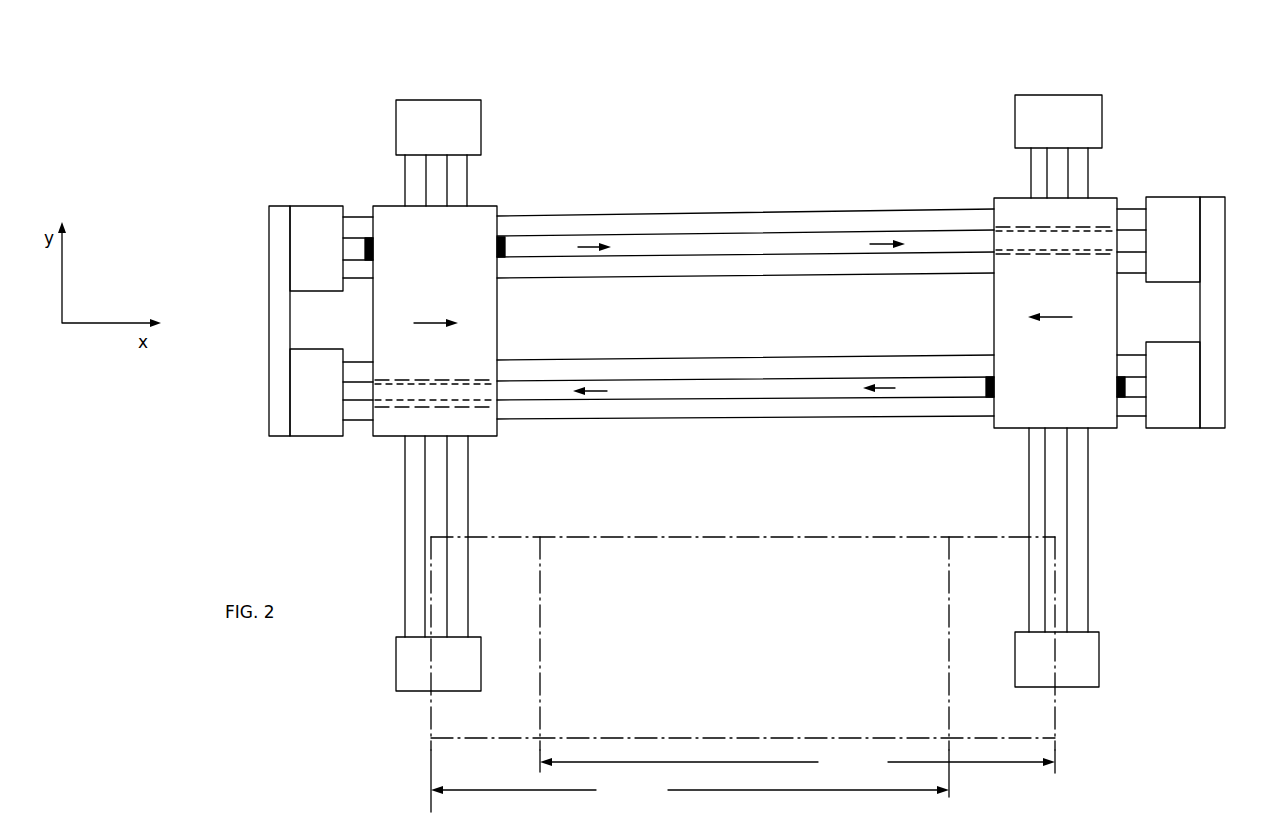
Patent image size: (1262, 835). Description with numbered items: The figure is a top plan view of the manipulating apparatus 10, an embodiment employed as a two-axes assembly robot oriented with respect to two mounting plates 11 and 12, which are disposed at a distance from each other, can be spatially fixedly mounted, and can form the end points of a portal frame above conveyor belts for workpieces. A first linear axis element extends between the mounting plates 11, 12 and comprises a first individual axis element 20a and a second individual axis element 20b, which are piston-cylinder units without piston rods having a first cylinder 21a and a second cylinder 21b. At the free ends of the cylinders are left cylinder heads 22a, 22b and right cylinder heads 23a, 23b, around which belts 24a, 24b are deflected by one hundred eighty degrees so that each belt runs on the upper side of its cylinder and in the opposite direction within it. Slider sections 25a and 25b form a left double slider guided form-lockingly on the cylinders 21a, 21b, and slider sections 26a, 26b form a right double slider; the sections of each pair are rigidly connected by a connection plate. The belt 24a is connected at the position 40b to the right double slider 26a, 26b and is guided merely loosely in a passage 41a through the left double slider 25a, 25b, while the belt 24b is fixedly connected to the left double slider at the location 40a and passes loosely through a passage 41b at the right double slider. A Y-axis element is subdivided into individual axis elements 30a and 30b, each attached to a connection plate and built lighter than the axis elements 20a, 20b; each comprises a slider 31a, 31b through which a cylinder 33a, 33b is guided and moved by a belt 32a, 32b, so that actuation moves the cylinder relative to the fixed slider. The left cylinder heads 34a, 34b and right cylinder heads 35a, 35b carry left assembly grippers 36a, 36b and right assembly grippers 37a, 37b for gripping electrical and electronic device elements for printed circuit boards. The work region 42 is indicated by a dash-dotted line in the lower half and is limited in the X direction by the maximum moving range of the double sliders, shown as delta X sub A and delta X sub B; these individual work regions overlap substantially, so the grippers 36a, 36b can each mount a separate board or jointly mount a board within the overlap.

The manipulating apparatus 10 is at (251, 43).
The mounting plate 11 is at (278, 316).
The mounting plate 12 is at (1222, 325).
The first individual axis element 20a is at (745, 431).
The second individual axis element 20b is at (745, 204).
The first cylinder 21a is at (568, 420).
The second cylinder 21b is at (546, 216).
The left cylinder head 22a is at (305, 438).
The left cylinder head 22b is at (305, 218).
The right cylinder head 23a is at (1177, 429).
The right cylinder head 23b is at (1160, 199).
The belt 24a is at (672, 390).
The belt 24b is at (655, 237).
The slider section 25a is at (480, 437).
The slider section 25b is at (482, 200).
The slider section 26a is at (1012, 430).
The slider section 26b is at (993, 198).
The first individual axis element 30a is at (370, 501).
The second individual axis element 30b is at (1119, 554).
The slider 31a is at (493, 325).
The slider 31b is at (1000, 312).
The belt 32a is at (438, 529).
The belt 32b is at (1048, 500).
The cylinder 33a is at (417, 570).
The cylinder 33b is at (1082, 598).
The left cylinder head 34a is at (407, 652).
The left cylinder head 34b is at (1090, 645).
The right cylinder head 35a is at (445, 113).
The right cylinder head 35b is at (1072, 108).
The left assembly gripper 36a is at (410, 697).
The left assembly gripper 36b is at (1076, 696).
The right assembly gripper 37a is at (399, 92).
The right assembly gripper 37b is at (1036, 88).
The location 40a is at (505, 248).
The position 40b is at (986, 380).
The passage 41a is at (497, 378).
The passage 41b is at (1018, 253).
The work region 42 is at (821, 552).